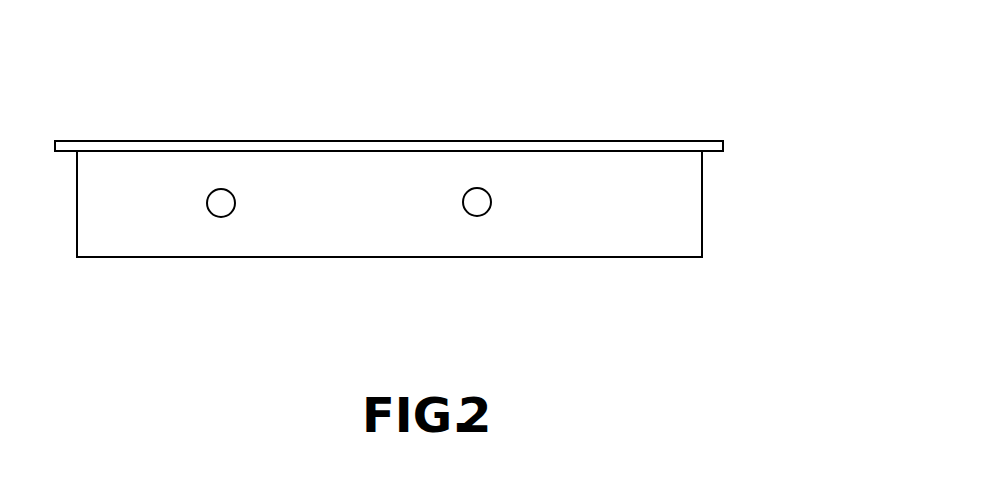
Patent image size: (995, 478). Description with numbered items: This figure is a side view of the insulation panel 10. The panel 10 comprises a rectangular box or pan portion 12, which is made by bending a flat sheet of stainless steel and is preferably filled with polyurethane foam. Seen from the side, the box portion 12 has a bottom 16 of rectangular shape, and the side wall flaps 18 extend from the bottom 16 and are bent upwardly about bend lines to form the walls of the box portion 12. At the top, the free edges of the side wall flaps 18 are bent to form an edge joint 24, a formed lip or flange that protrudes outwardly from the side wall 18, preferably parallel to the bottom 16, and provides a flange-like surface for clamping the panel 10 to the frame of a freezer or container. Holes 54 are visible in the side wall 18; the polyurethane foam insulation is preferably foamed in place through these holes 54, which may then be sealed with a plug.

The insulation panel 10 is at (477, 120).
The box portion 12 is at (717, 185).
The bottom 16 is at (557, 257).
The side wall flaps 18 is at (703, 237).
The edge joint 24 is at (736, 137).
The holes 54 is at (491, 199).